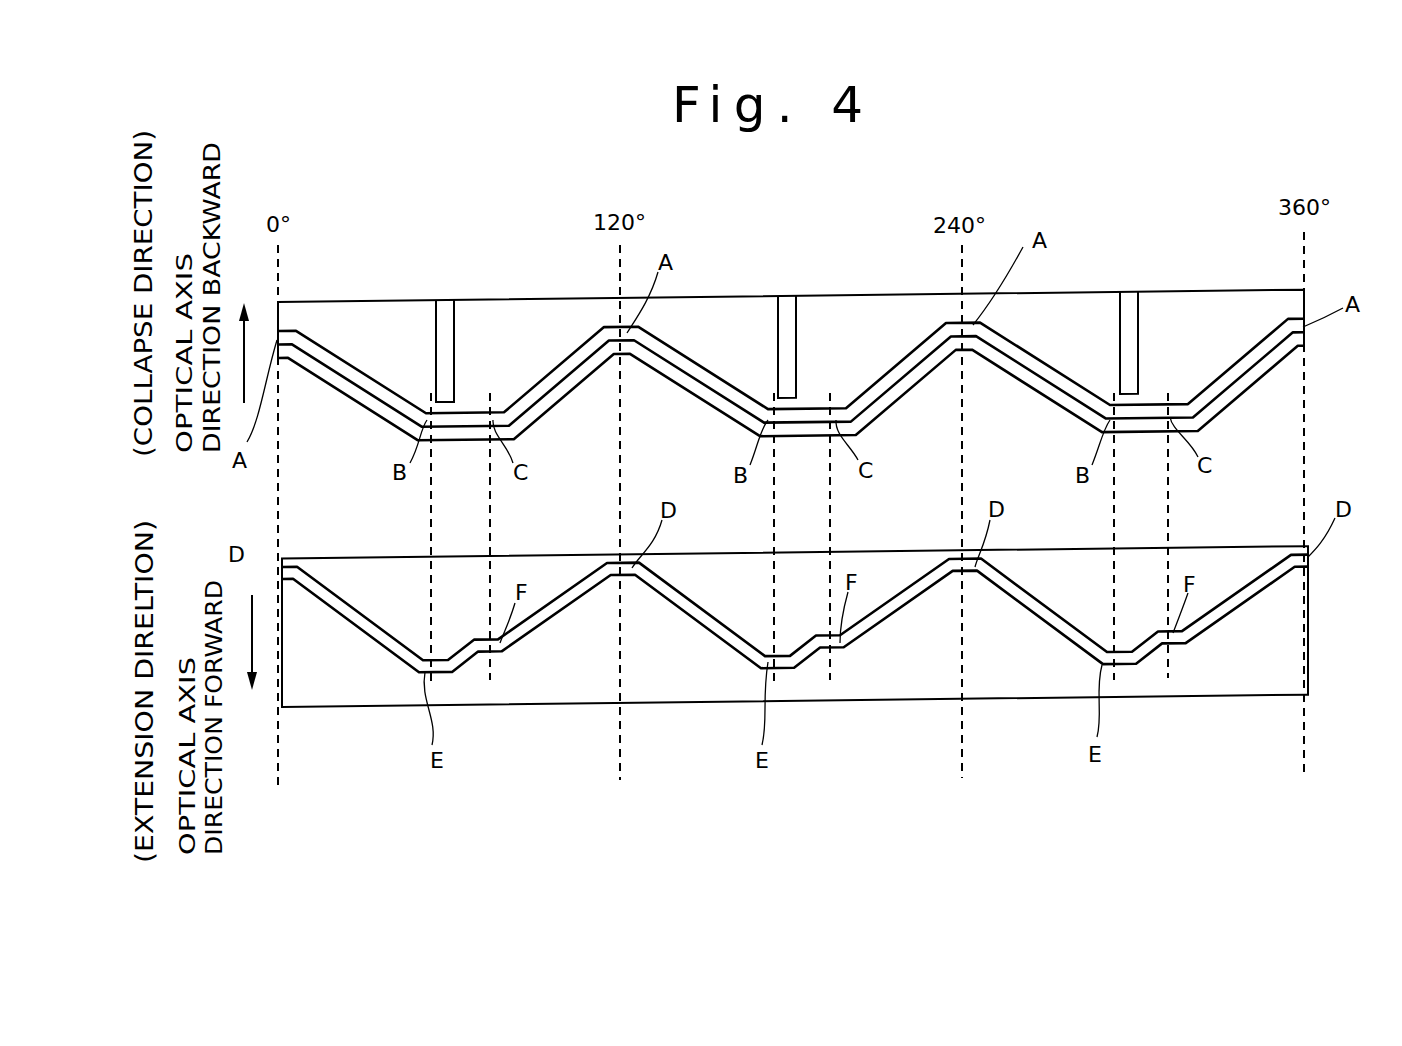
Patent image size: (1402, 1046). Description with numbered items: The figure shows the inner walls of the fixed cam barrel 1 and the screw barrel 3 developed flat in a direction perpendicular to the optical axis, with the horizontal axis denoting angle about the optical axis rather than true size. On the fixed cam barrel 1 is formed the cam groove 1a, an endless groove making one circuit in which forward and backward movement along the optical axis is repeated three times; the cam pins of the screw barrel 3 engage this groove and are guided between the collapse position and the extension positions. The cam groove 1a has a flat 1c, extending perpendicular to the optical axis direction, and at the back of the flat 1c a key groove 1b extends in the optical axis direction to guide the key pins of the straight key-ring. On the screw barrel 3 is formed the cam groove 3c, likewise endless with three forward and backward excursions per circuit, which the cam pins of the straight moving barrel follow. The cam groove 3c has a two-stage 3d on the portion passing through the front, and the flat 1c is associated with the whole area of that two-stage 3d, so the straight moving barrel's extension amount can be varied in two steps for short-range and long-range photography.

The fixed cam barrel 1 is at (720, 312).
The cam groove 1a is at (340, 370).
The key groove 1b is at (447, 352).
The flat 1c is at (474, 401).
The screw barrel 3 is at (1008, 677).
The cam groove 3c is at (378, 638).
The two-stage 3d is at (472, 677).